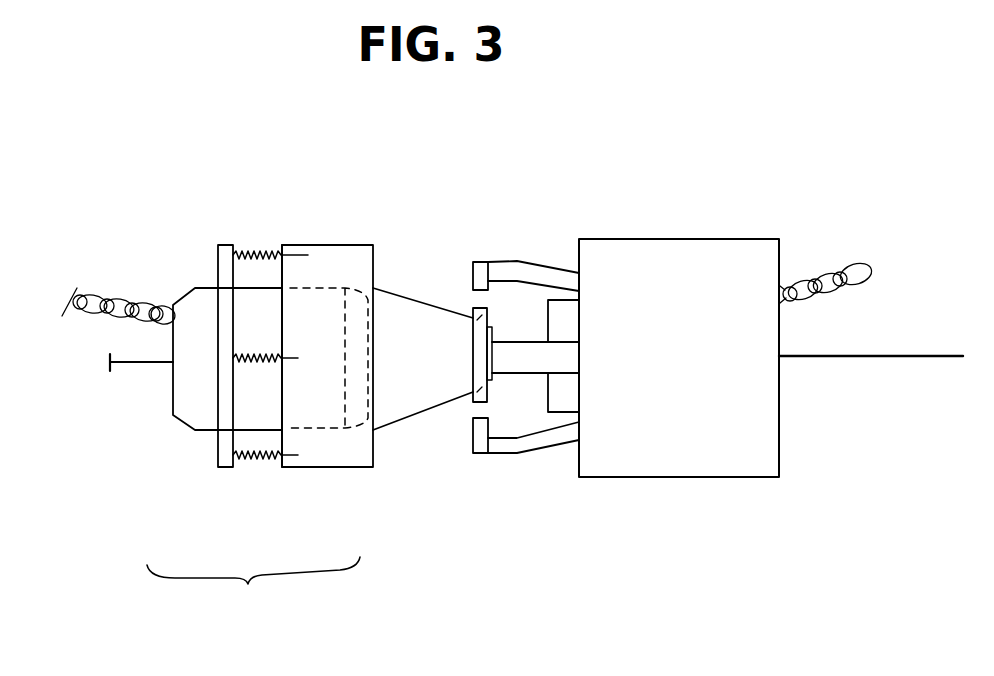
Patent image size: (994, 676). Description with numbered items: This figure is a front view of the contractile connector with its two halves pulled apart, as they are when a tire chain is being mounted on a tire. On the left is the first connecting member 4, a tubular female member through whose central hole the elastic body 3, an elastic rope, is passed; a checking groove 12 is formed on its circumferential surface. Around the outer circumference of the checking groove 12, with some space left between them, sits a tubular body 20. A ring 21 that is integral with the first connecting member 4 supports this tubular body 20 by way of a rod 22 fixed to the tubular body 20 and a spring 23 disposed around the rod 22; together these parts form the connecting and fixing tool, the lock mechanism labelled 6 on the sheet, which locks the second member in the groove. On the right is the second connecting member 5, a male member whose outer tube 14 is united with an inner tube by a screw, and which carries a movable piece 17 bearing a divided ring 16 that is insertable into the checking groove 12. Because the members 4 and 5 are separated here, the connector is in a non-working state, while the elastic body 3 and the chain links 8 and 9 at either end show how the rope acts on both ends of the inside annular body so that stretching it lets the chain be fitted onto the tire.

The elastic body 3 is at (132, 363).
The first connecting member 4 is at (424, 270).
The second connecting member 5 is at (556, 237).
The plug assembly 6 is at (253, 597).
The chain 8 is at (108, 300).
The chain 9 is at (833, 270).
The checking groove 12 is at (358, 290).
The outer tube 14 is at (698, 479).
The divided ring 16 is at (475, 438).
The movable piece 17 is at (525, 448).
The tubular body 20 is at (332, 455).
The ring 21 is at (225, 467).
The rod 22 is at (288, 467).
The spring 23 is at (247, 463).